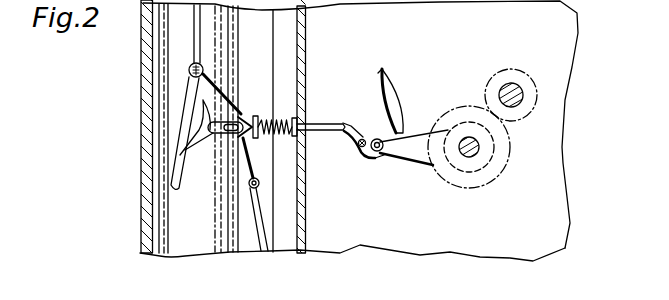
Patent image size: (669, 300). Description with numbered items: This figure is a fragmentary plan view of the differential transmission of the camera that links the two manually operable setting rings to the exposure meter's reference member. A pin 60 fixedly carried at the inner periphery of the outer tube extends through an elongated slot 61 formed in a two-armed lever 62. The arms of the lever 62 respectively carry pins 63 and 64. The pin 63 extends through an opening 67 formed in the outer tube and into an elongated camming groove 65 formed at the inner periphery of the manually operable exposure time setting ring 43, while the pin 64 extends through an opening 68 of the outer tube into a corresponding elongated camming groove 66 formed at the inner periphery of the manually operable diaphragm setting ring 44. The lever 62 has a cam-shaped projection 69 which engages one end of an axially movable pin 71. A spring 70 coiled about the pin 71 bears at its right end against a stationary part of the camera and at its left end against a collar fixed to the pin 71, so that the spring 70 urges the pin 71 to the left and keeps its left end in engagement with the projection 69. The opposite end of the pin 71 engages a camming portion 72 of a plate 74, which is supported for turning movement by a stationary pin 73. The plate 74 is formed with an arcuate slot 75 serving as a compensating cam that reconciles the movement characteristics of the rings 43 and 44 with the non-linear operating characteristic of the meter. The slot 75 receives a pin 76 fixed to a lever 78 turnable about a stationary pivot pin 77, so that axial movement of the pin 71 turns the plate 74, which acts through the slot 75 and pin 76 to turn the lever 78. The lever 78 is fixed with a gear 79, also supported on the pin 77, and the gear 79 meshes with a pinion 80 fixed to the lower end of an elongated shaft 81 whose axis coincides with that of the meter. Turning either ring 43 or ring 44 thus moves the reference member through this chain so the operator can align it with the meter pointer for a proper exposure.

The exposure time setting ring 43 is at (208, 253).
The diaphragm setting ring 44 is at (237, 237).
The pin 60 is at (240, 112).
The elongated slot 61 is at (185, 150).
The two-armed lever 62 is at (207, 128).
The pin 63 is at (188, 70).
The pin 64 is at (259, 186).
The camming groove 65 is at (185, 116).
The camming groove 66 is at (266, 225).
The opening 67 is at (172, 226).
The opening 68 is at (262, 34).
The cam-shaped projection 69 is at (245, 112).
The spring 70 is at (278, 118).
The axially movable pin 71 is at (320, 133).
The camming portion 72 is at (354, 126).
The stationary pin 73 is at (364, 148).
The plate 74 is at (386, 72).
The arcuate slot 75 is at (400, 100).
The pin 76 is at (383, 152).
The stationary pivot pin 77 is at (470, 158).
The lever 78 is at (421, 163).
The gear 79 is at (505, 172).
The pinion 80 is at (516, 116).
The shaft 81 is at (508, 83).